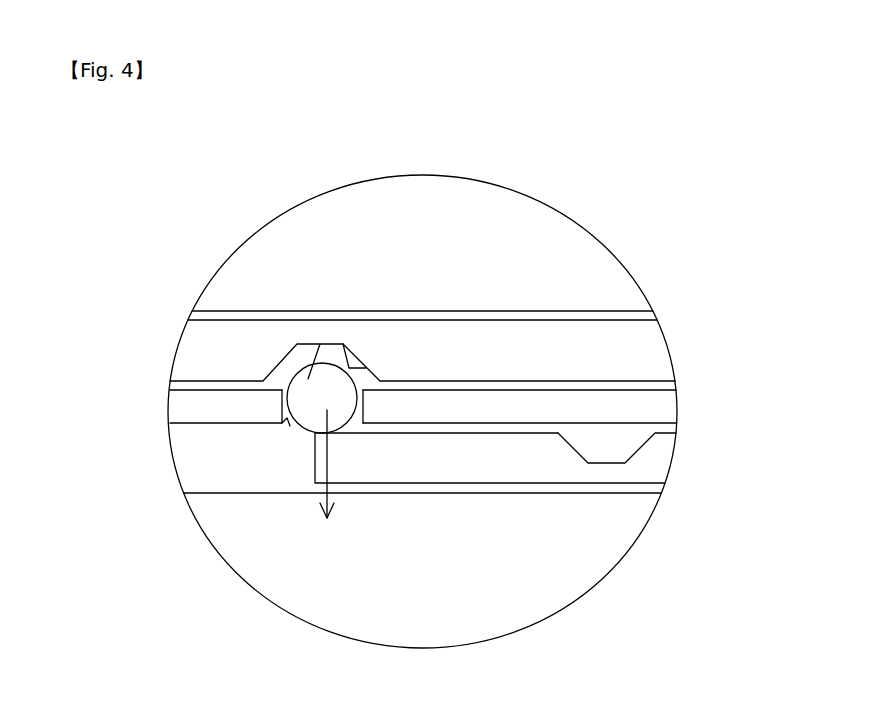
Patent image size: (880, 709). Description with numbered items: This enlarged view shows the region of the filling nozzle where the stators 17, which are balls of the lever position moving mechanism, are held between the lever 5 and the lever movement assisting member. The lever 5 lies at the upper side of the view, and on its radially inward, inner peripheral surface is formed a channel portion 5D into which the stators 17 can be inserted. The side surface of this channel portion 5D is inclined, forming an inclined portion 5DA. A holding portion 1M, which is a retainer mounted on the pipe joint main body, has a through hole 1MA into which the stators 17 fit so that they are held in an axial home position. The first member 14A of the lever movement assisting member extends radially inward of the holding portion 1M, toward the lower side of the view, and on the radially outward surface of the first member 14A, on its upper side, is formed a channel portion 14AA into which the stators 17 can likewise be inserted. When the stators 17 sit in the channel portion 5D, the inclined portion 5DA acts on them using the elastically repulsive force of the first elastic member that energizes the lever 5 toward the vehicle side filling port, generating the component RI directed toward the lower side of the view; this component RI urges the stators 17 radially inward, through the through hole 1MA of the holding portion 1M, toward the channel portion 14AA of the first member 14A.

The lever 5 is at (653, 347).
The channel portion 5D is at (293, 377).
The inclined portion 5DA is at (339, 344).
The stators 17 is at (308, 379).
The holding portion 1M is at (215, 410).
The through hole 1MA is at (292, 423).
The first member 14A is at (506, 463).
The channel portion 14AA is at (608, 463).
The component RI is at (327, 465).